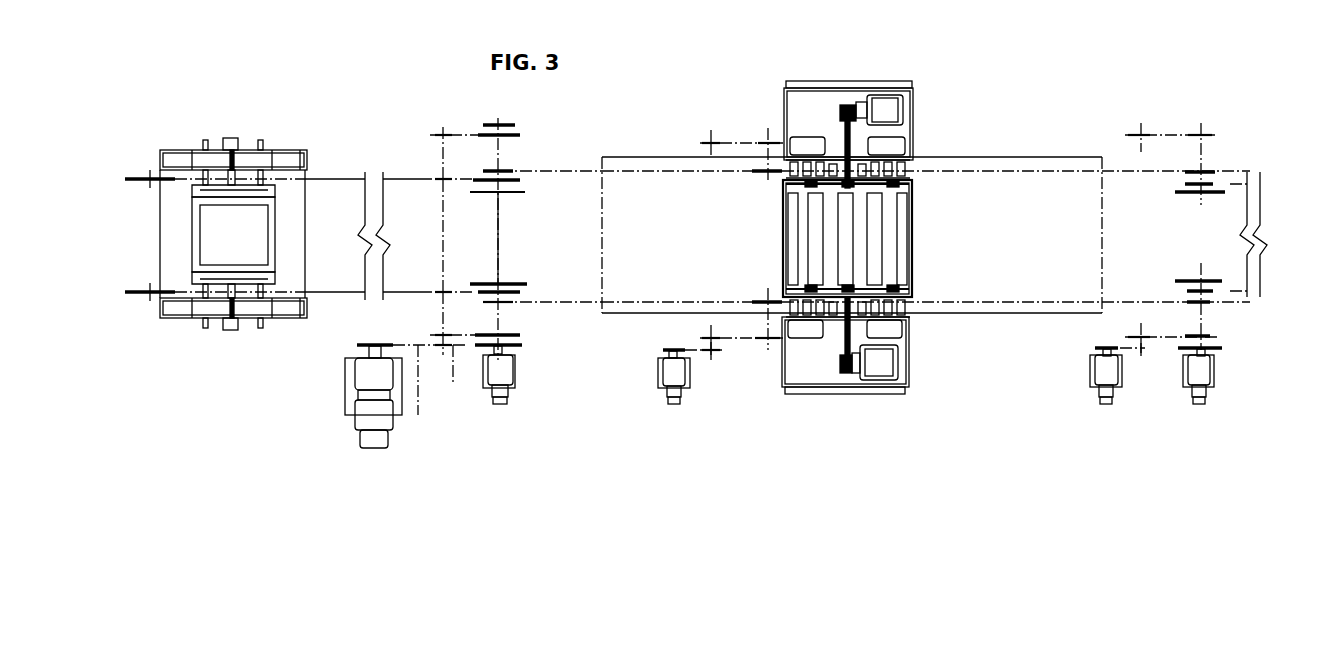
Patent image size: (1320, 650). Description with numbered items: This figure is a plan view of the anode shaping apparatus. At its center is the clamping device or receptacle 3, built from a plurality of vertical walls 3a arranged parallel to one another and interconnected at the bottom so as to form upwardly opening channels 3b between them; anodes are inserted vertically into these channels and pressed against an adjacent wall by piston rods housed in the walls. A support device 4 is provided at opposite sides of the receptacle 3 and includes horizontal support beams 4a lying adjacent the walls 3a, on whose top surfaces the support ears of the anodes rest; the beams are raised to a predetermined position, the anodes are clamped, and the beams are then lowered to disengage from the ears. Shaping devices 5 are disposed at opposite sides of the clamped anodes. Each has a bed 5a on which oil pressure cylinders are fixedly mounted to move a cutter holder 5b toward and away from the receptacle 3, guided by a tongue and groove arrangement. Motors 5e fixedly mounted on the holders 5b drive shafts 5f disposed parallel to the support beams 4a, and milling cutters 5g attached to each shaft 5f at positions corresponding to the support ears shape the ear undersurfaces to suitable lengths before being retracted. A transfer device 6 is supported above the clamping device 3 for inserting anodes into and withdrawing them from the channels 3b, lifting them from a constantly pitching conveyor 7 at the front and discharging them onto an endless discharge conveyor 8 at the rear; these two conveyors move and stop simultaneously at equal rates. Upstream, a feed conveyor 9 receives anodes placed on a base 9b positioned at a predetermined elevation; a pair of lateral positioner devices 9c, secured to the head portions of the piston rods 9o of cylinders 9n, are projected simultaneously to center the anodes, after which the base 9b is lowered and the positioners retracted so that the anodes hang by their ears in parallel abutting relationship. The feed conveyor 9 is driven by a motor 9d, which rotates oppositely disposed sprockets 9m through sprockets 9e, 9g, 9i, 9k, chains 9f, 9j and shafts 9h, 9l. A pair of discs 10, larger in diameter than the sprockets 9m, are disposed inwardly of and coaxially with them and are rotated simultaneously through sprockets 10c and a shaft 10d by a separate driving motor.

The clamping device or receptacle 3 is at (913, 213).
The vertical walls 3a is at (905, 212).
The channels 3b is at (830, 230).
The support device 4 is at (910, 170).
The support beams 4a is at (805, 183).
The shaping devices 5 is at (913, 101).
The beds 5a is at (890, 82).
The cutter holders 5b is at (800, 100).
The motors 5e is at (898, 105).
The shafts 5f is at (845, 142).
The milling cutters 5g is at (805, 145).
The transfer device 6 is at (1030, 313).
The constantly pitching conveyor 7 is at (573, 168).
The endless discharge conveyor 8 is at (1062, 158).
The feed conveyor 9 is at (328, 178).
The base 9b is at (257, 257).
The lateral positioner devices 9c is at (248, 180).
The motor 9d is at (357, 418).
The sprocket 9e is at (368, 345).
The chain 9f is at (418, 400).
The sprocket 9g is at (453, 360).
The shaft 9h is at (443, 205).
The sprocket 9i is at (437, 135).
The chain 9j is at (470, 125).
The sprocket 9k is at (512, 138).
The shaft 9l is at (485, 171).
The sprockets 9m is at (520, 181).
The cylinders 9n is at (205, 148).
The piston rods 9o is at (250, 182).
The discs 10 is at (520, 195).
The sprocket 10c is at (518, 120).
The shaft 10d is at (497, 248).